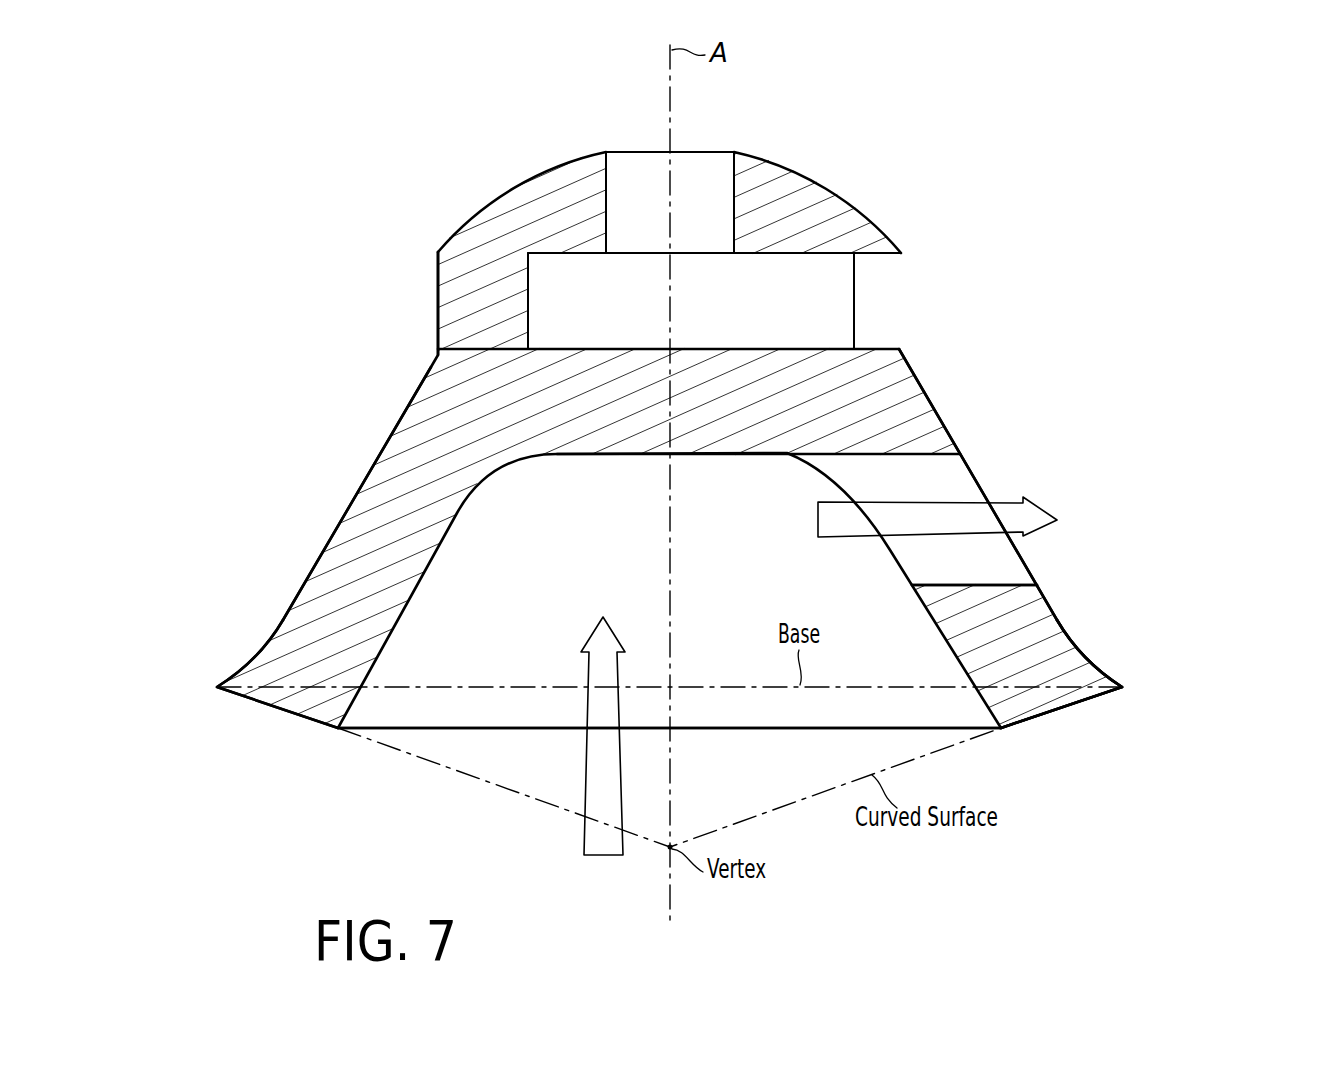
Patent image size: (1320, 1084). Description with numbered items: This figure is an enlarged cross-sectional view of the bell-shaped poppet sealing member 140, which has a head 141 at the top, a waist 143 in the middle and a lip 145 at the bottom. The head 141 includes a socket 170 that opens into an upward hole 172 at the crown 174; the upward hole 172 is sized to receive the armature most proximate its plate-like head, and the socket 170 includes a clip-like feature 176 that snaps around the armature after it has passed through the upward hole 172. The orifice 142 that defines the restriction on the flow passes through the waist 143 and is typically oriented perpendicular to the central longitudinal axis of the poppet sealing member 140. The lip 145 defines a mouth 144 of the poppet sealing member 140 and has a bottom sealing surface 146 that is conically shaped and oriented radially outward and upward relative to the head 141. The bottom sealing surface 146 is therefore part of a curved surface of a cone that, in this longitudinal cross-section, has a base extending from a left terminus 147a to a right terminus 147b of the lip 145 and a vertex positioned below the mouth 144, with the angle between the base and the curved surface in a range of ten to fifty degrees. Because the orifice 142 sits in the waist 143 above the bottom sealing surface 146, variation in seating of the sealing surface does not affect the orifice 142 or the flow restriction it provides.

The poppet sealing member 140 is at (1152, 206).
The head 141 is at (438, 292).
The orifice 142 is at (953, 473).
The waist 143 is at (368, 489).
The mouth 144 is at (438, 729).
The lip 145 is at (1055, 637).
The bottom sealing surface 146 is at (1050, 717).
The left terminus 147a is at (217, 687).
The right terminus 147b is at (1123, 687).
The socket 170 is at (908, 293).
The upward hole 172 is at (692, 157).
The crown 174 is at (608, 150).
The clip-like feature 176 is at (845, 200).